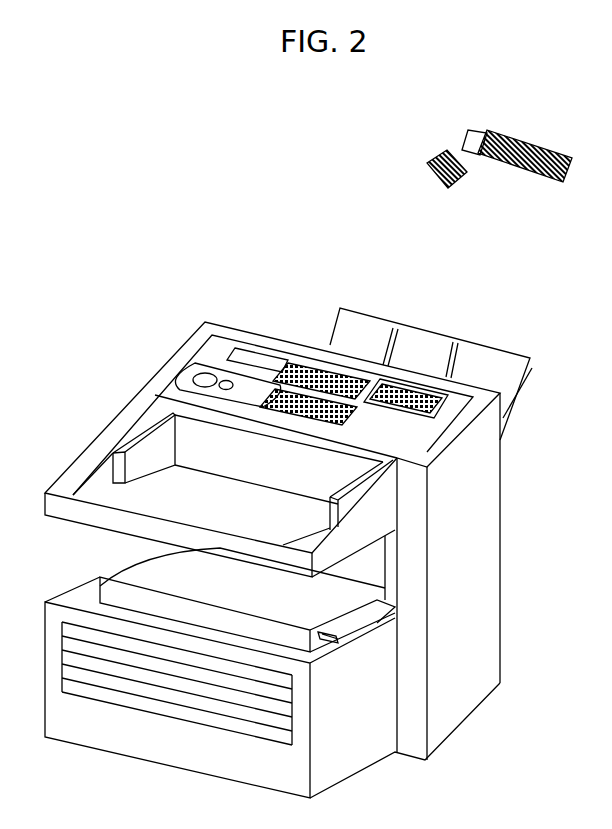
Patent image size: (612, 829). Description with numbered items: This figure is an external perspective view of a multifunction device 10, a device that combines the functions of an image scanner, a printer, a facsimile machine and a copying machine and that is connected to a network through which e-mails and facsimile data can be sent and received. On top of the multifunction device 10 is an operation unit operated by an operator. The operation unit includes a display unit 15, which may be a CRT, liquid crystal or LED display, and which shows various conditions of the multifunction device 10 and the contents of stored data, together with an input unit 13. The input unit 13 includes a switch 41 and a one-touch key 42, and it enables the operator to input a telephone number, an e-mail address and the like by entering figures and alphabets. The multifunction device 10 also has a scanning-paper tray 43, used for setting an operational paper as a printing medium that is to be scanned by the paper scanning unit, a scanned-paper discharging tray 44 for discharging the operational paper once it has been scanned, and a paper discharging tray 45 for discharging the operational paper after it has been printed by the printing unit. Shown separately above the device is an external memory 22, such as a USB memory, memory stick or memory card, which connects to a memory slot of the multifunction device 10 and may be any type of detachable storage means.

The multifunction device 10 is at (530, 492).
The input unit 13 is at (112, 328).
The display unit 15 is at (258, 345).
The external memory 22 is at (543, 146).
The switch 41 is at (162, 387).
The one-touch key 42 is at (228, 358).
The scanning-paper tray 43 is at (152, 492).
The scanned-paper discharging tray 44 is at (458, 338).
The paper discharging tray 45 is at (100, 580).